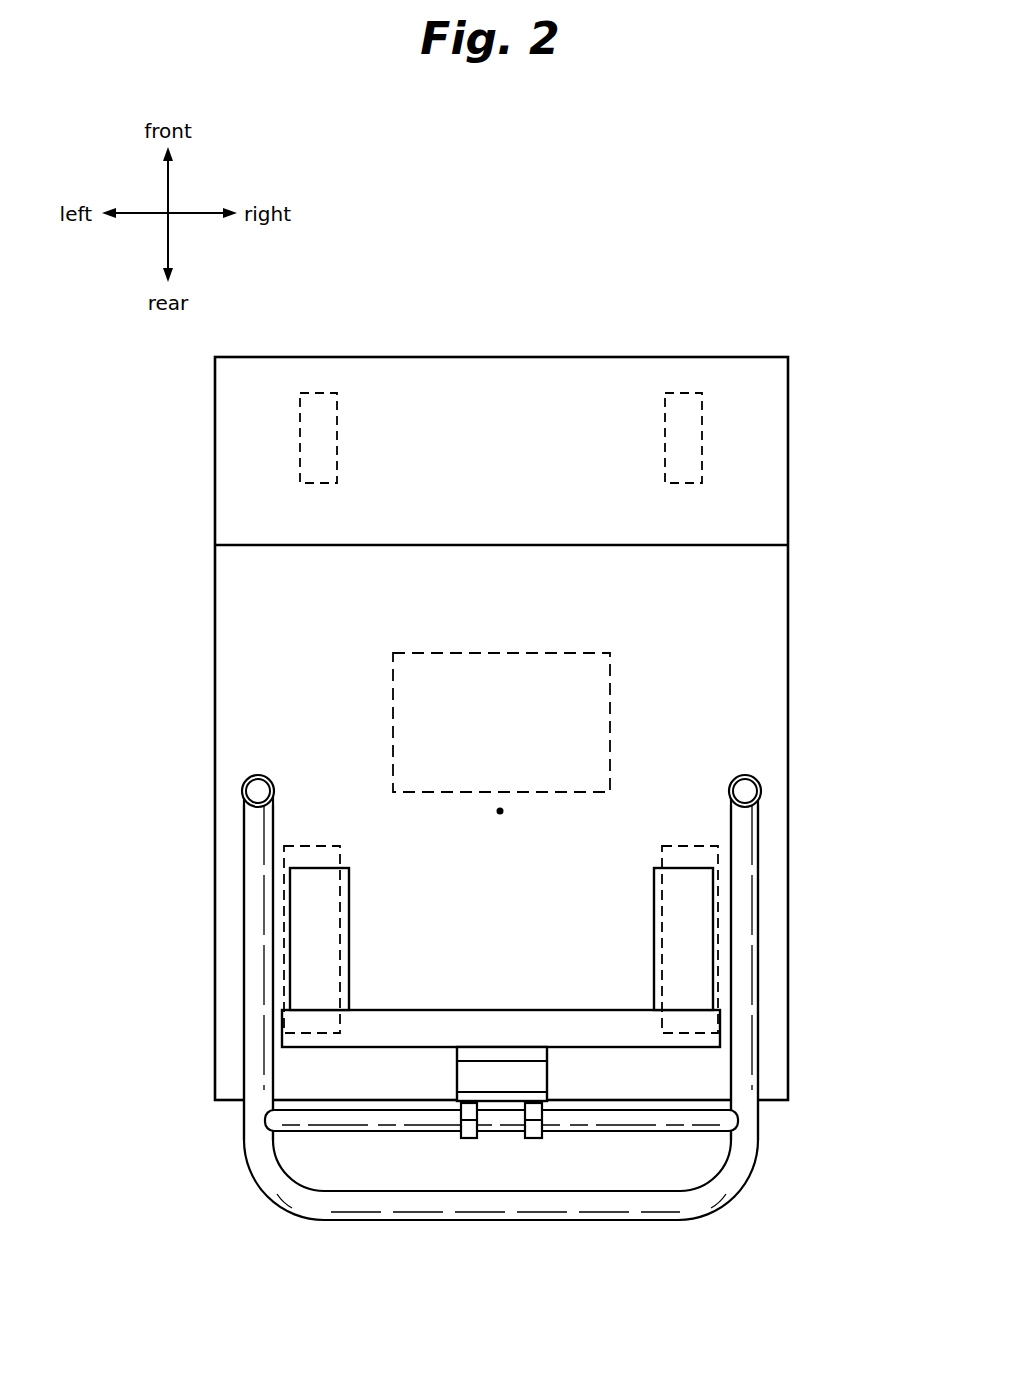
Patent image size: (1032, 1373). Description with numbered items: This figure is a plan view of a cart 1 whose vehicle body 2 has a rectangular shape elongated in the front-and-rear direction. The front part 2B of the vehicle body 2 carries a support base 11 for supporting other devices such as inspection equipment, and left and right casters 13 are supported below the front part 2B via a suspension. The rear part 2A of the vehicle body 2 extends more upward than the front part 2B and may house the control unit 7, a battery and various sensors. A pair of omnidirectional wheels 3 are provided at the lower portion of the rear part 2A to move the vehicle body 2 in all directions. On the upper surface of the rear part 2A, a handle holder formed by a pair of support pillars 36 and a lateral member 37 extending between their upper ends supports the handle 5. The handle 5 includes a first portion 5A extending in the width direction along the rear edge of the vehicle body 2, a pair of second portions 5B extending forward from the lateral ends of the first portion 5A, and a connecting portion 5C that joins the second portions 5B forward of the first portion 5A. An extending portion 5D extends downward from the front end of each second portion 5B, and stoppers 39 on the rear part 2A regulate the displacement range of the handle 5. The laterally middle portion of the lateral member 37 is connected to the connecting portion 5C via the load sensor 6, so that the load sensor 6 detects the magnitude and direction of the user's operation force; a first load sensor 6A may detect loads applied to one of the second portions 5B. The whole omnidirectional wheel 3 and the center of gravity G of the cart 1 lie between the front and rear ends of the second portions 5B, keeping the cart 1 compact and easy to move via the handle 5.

The cart 1 is at (561, 320).
The vehicle body 2 is at (424, 360).
The rear part 2A is at (690, 700).
The front part 2B is at (728, 497).
The omnidirectional wheel 3 is at (319, 832).
The handle 5 is at (496, 1009).
The first portion 5A is at (595, 1203).
The second portion 5B is at (253, 877).
The connecting portion 5C is at (690, 1123).
The extending portion 5D is at (255, 793).
The load sensor 6 is at (540, 1080).
The first load sensor 6A is at (534, 1138).
The control unit 7 is at (597, 652).
The support base 11 is at (615, 395).
The caster 13 is at (320, 380).
The support pillar 36 is at (310, 942).
The lateral member 37 is at (382, 1033).
The stopper 39 is at (250, 783).
The center of gravity G is at (500, 811).